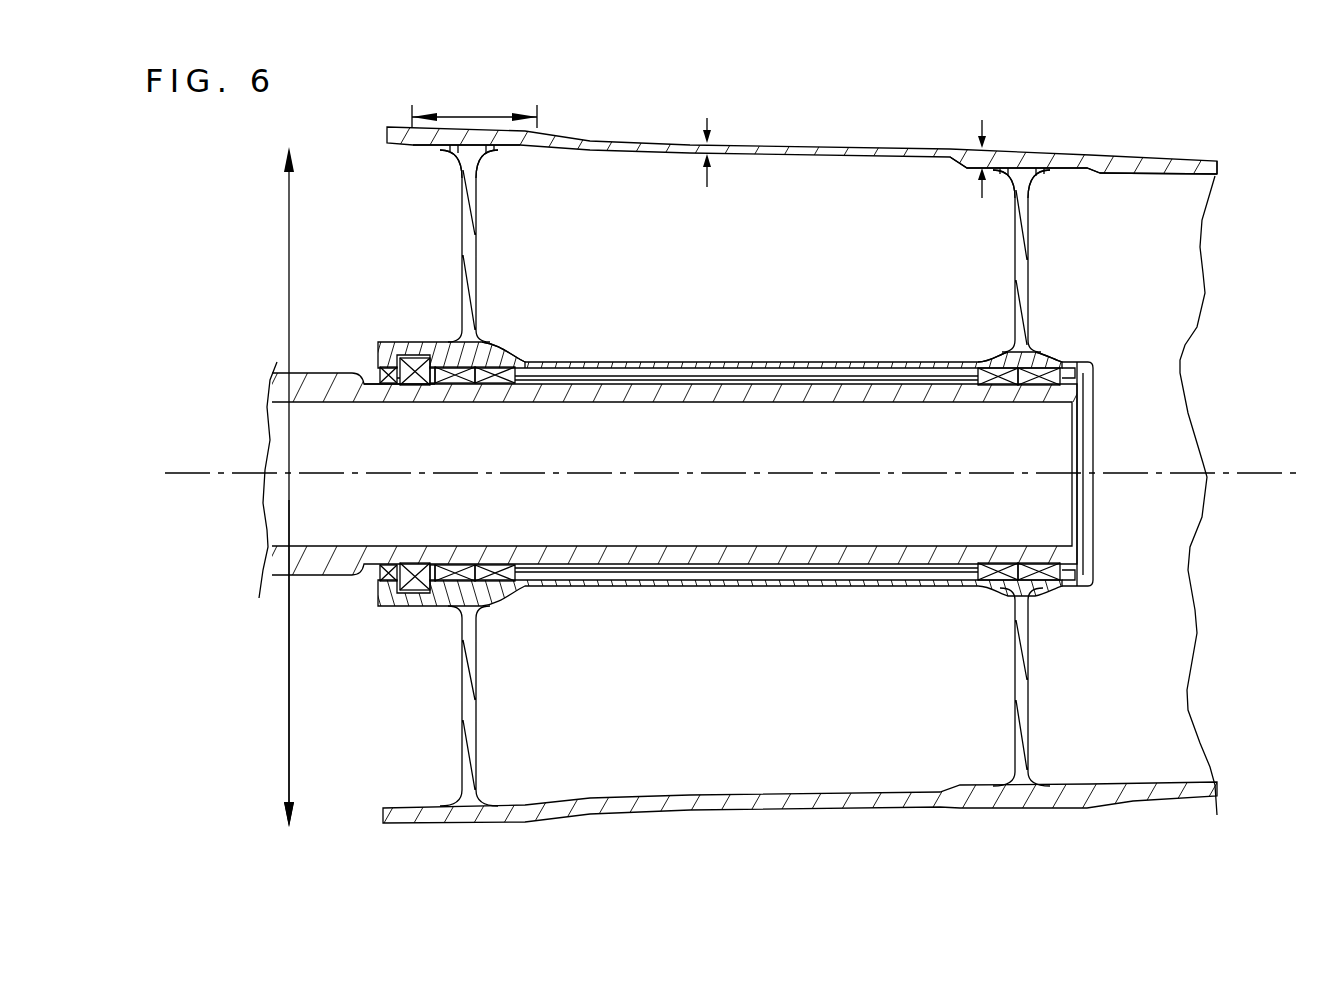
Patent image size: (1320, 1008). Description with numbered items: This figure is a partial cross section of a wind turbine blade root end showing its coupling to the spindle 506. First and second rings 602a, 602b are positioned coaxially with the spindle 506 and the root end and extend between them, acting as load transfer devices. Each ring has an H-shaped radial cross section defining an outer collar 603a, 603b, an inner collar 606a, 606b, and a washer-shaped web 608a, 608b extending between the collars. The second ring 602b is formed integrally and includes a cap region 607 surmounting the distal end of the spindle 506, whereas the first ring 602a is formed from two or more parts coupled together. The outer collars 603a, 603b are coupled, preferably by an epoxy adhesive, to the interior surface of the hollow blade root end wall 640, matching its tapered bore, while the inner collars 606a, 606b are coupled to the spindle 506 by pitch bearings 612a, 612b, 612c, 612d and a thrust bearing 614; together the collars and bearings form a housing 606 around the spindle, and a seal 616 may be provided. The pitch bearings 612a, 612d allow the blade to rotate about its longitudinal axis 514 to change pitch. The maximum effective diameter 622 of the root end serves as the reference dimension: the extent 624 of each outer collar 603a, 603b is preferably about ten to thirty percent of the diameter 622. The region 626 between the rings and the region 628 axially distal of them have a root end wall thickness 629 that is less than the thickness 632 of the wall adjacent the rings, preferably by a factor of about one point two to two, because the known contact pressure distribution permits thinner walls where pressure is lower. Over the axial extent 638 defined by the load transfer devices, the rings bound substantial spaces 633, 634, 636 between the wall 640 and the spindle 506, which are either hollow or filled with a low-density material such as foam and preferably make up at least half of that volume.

The spindle 506 is at (707, 459).
The longitudinal axis 514 is at (1232, 474).
The first ring 602a is at (477, 172).
The second ring 602b is at (1030, 217).
The outer collar 603a is at (500, 153).
The outer collar 603b is at (1008, 150).
The housing 606 is at (528, 80).
The inner collar 606a is at (492, 350).
The inner collar 606b is at (998, 358).
The cap region 607 is at (1092, 463).
The washer-shaped web 608a is at (478, 273).
The washer-shaped web 608b is at (1030, 290).
The pitch bearing 612a is at (455, 387).
The pitch bearing 612b is at (498, 388).
The pitch bearing 612c is at (987, 390).
The pitch bearing 612d is at (1033, 392).
The thrust bearing 614 is at (410, 392).
The seal 616 is at (384, 386).
The maximum effective diameter 622 is at (292, 240).
The extent of the outer collar 624 is at (473, 117).
The region between the load transfer devices 626 is at (932, 126).
The region axially distal of the load transfer devices 628 is at (1212, 177).
The root end wall thickness 629 is at (700, 180).
The wall thickness adjacent the load transfer devices 632 is at (982, 188).
The space 633 is at (426, 680).
The space 634 is at (831, 707).
The space 636 is at (1125, 705).
The axial extent 638 is at (1123, 810).
The blade root end wall 640 is at (383, 817).